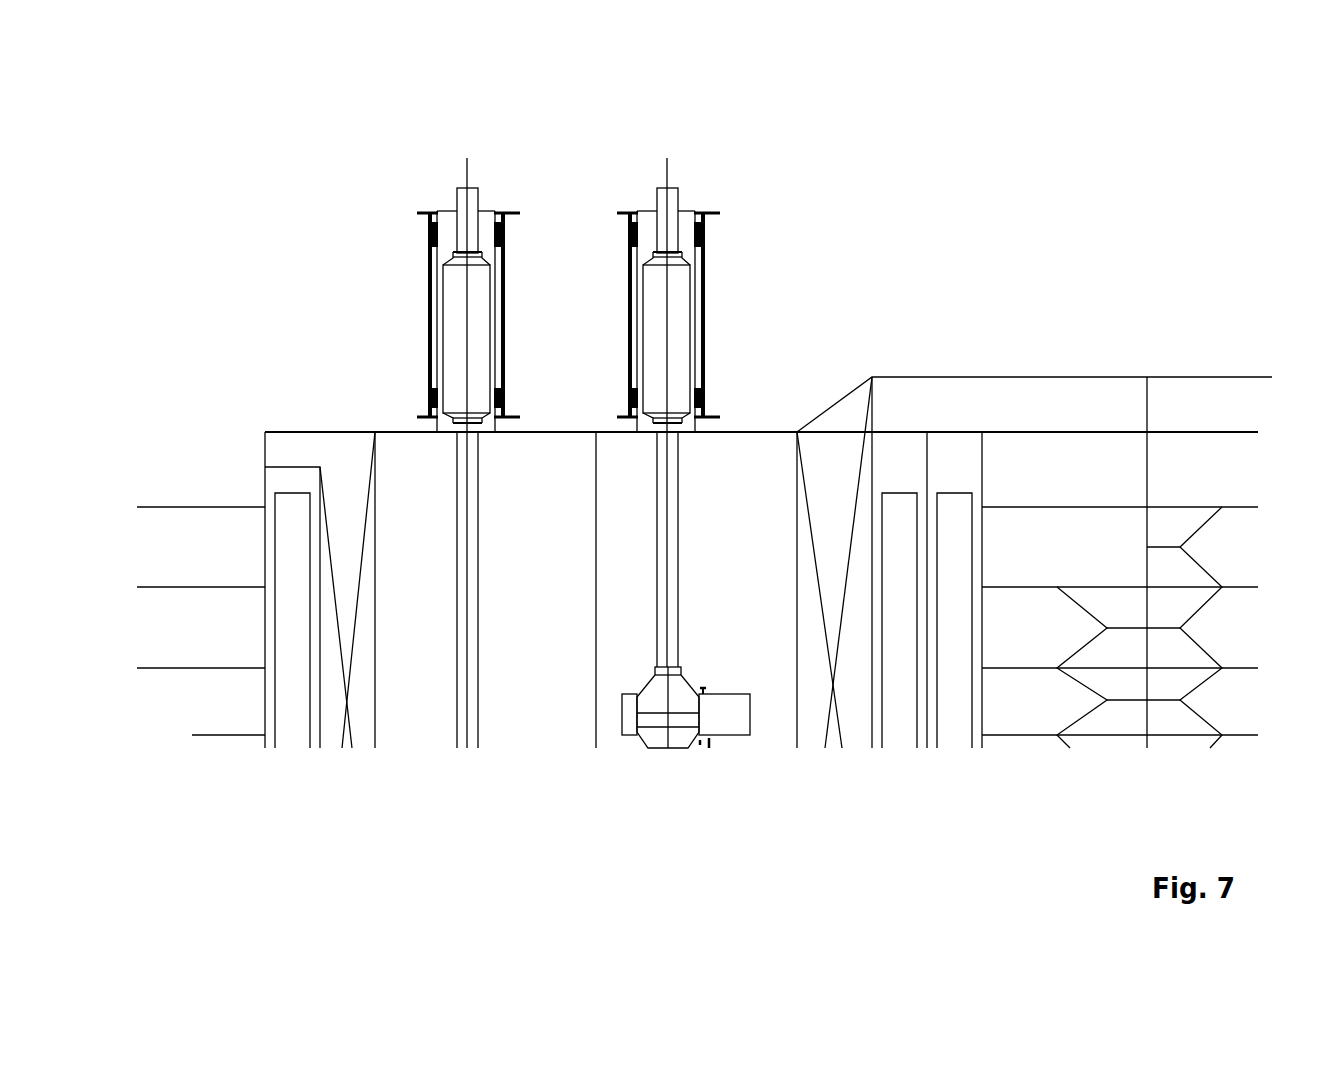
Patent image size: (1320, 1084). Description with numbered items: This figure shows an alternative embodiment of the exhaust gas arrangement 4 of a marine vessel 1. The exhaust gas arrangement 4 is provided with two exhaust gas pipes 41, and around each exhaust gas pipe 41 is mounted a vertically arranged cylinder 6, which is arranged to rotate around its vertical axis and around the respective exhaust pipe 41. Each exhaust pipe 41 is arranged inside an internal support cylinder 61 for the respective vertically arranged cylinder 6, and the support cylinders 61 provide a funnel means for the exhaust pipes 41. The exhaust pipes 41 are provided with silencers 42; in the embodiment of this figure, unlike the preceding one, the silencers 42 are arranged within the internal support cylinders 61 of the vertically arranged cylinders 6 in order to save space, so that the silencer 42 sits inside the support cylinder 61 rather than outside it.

The marine vessel 1 is at (1096, 339).
The exhaust gas arrangement 4 is at (344, 405).
The vertically arranged cylinder 6 is at (412, 309).
The exhaust gas pipe 41 is at (473, 198).
The silencer 42 is at (452, 345).
The internal support cylinder 61 is at (438, 232).